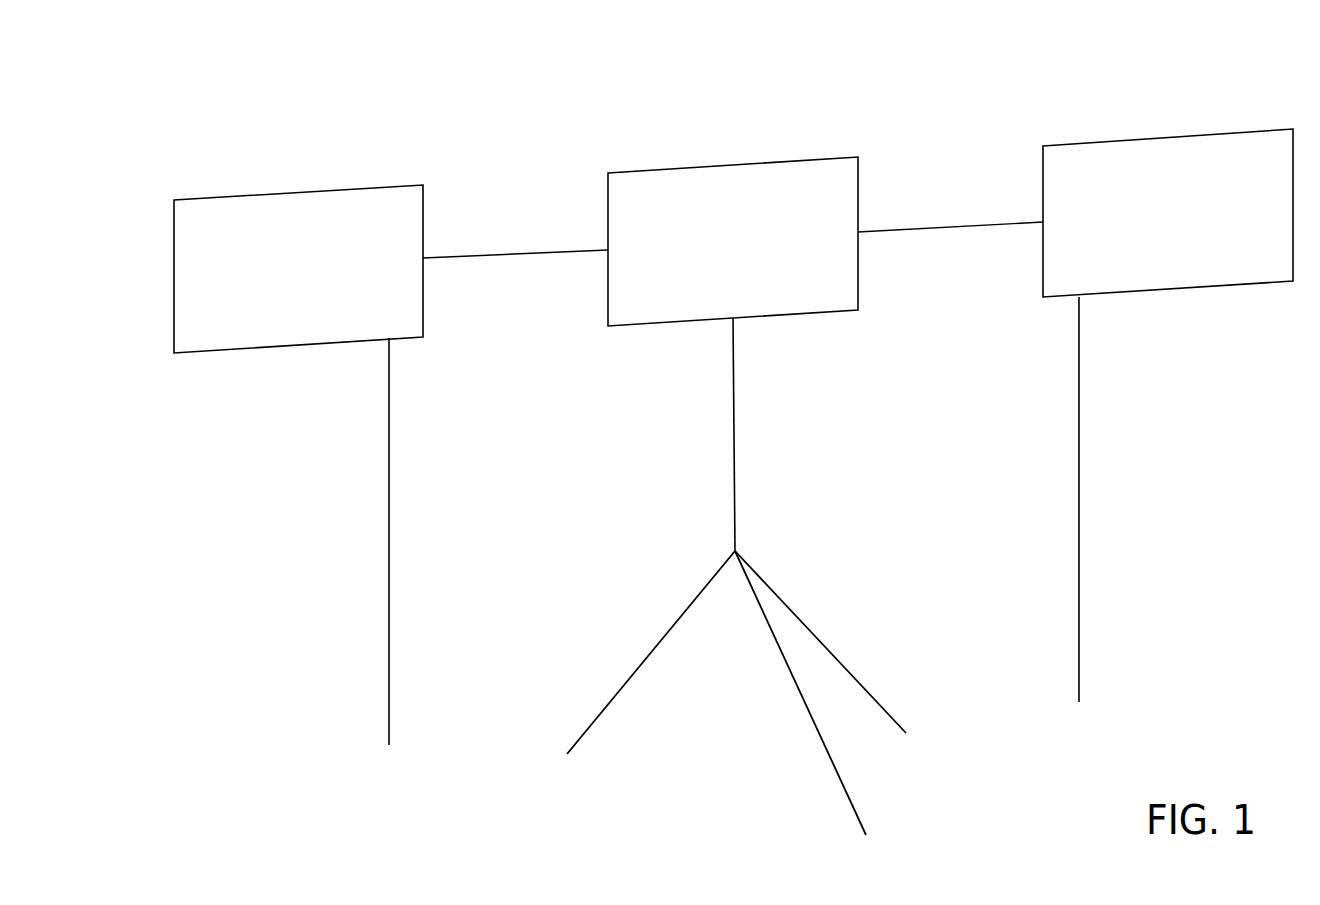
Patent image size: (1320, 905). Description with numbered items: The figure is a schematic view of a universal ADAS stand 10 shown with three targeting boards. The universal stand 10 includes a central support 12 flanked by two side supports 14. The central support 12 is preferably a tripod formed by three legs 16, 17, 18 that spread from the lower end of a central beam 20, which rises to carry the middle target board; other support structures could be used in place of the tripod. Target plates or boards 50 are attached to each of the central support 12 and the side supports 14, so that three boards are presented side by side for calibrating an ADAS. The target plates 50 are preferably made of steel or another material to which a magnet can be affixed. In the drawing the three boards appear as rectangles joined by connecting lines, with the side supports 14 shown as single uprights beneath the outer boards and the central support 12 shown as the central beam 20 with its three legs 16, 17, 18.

The universal ADAS stand 10 is at (452, 95).
The central support 12 is at (673, 434).
The side support 14 is at (389, 507).
The leg 16 is at (800, 697).
The leg 17 is at (823, 642).
The leg 18 is at (679, 616).
The central beam 20 is at (738, 434).
The target plate 50 is at (297, 190).